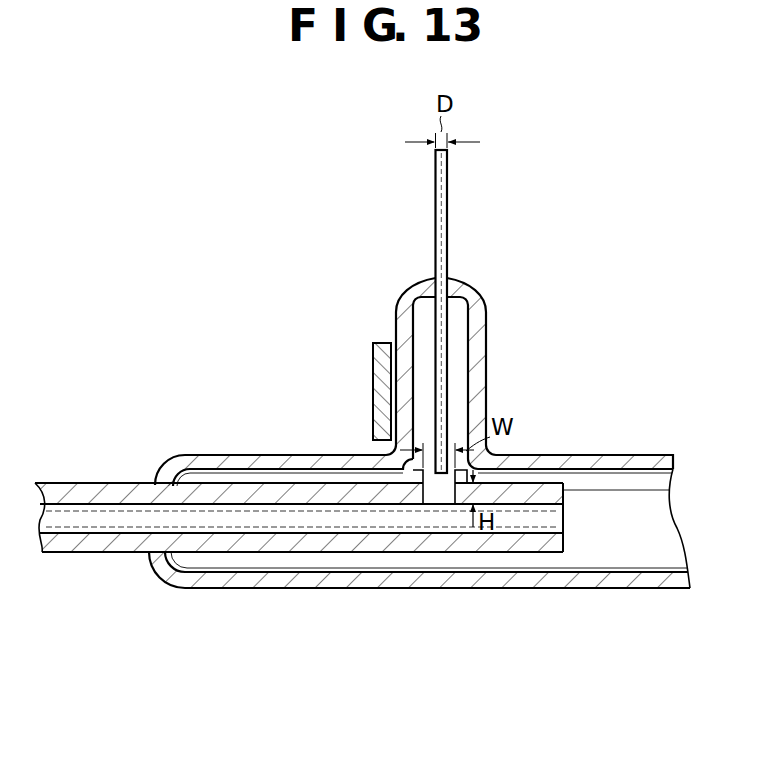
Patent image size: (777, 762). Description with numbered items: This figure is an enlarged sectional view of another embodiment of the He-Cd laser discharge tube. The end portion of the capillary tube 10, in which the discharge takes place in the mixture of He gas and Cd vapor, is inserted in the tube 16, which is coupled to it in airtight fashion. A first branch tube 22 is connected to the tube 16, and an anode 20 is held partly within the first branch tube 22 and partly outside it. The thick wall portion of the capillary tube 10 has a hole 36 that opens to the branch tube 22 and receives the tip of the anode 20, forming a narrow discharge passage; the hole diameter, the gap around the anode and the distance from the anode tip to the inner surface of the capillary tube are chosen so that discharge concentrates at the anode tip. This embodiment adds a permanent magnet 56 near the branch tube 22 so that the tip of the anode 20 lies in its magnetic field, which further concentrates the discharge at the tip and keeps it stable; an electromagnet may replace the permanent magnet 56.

The capillary tube 10 is at (97, 553).
The tube 16 is at (612, 455).
The anode 20 is at (448, 205).
The first branch tube 22 is at (482, 345).
The hole 36 is at (437, 505).
The permanent magnet 56 is at (372, 367).